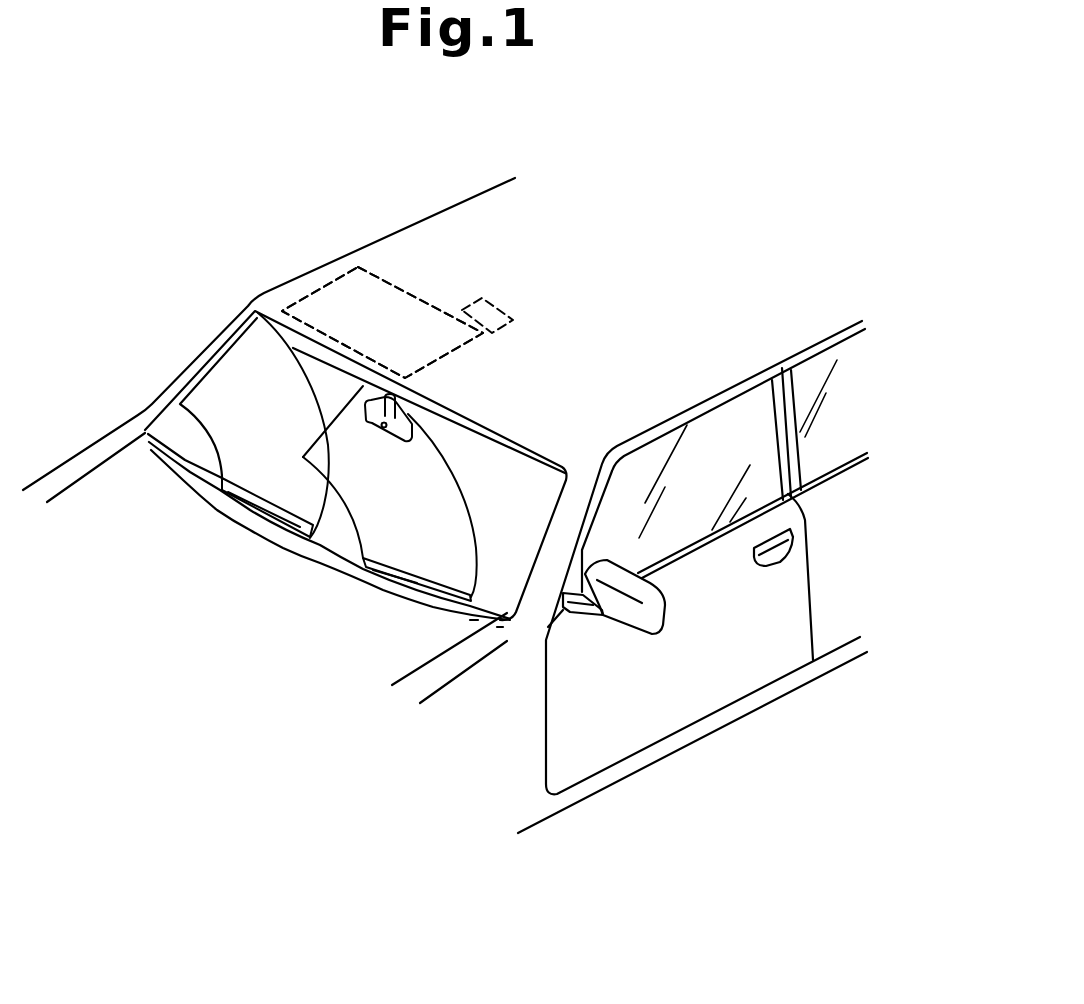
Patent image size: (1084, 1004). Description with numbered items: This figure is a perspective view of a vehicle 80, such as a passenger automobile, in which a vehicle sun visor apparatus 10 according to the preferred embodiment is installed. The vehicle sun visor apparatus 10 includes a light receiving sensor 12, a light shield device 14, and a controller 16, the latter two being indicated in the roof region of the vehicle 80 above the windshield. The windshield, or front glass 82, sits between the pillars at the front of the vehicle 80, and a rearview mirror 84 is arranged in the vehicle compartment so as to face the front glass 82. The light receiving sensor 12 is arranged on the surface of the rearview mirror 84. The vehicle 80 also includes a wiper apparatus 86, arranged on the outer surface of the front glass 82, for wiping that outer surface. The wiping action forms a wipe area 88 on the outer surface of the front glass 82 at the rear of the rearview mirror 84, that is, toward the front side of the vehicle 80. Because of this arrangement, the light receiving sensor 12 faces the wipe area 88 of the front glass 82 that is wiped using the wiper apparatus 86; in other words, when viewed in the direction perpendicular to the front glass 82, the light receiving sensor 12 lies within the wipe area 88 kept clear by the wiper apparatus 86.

The vehicle sun visor apparatus 10 is at (279, 210).
The light receiving sensor 12 is at (384, 428).
The light shield device 14 is at (297, 299).
The controller 16 is at (498, 308).
The vehicle 80 is at (426, 208).
The front glass 82 is at (228, 370).
The rearview mirror 84 is at (414, 437).
The wiper apparatus 86 is at (287, 528).
The wipe area 88 is at (306, 369).